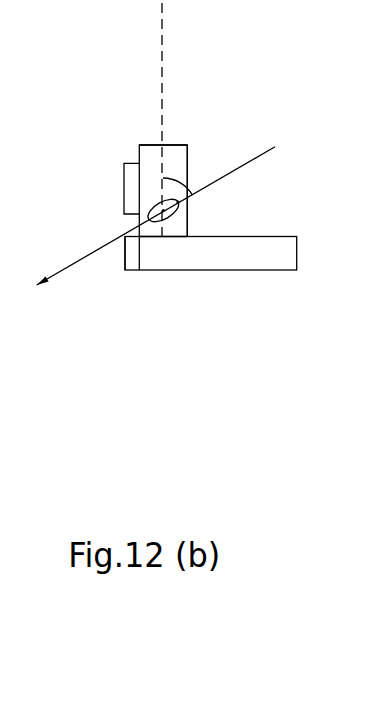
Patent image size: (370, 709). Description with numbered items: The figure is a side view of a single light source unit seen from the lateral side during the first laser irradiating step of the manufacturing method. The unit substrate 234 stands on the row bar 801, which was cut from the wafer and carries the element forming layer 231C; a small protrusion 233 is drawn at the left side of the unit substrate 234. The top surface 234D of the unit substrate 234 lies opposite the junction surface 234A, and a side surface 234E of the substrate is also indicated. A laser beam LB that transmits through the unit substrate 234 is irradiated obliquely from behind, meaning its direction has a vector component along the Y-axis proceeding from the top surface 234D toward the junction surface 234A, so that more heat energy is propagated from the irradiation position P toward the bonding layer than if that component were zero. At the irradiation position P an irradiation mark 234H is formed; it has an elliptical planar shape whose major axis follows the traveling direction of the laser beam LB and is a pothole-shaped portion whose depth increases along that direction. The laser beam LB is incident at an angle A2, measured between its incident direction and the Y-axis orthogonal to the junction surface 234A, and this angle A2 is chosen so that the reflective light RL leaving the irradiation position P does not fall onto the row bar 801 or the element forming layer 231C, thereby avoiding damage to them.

The protrusion 233 is at (131, 178).
The unit substrate 234 is at (149, 157).
The top surface 234D is at (180, 145).
The side surface of support member 234E is at (189, 147).
The irradiation mark 234H is at (179, 211).
The junction surface 234A is at (153, 237).
The element forming layer 231C is at (123, 267).
The row bar 801 is at (250, 257).
The laser beam LB is at (175, 216).
The reflective light RL is at (61, 301).
The angle A2 is at (184, 176).
The irradiation position P is at (178, 225).